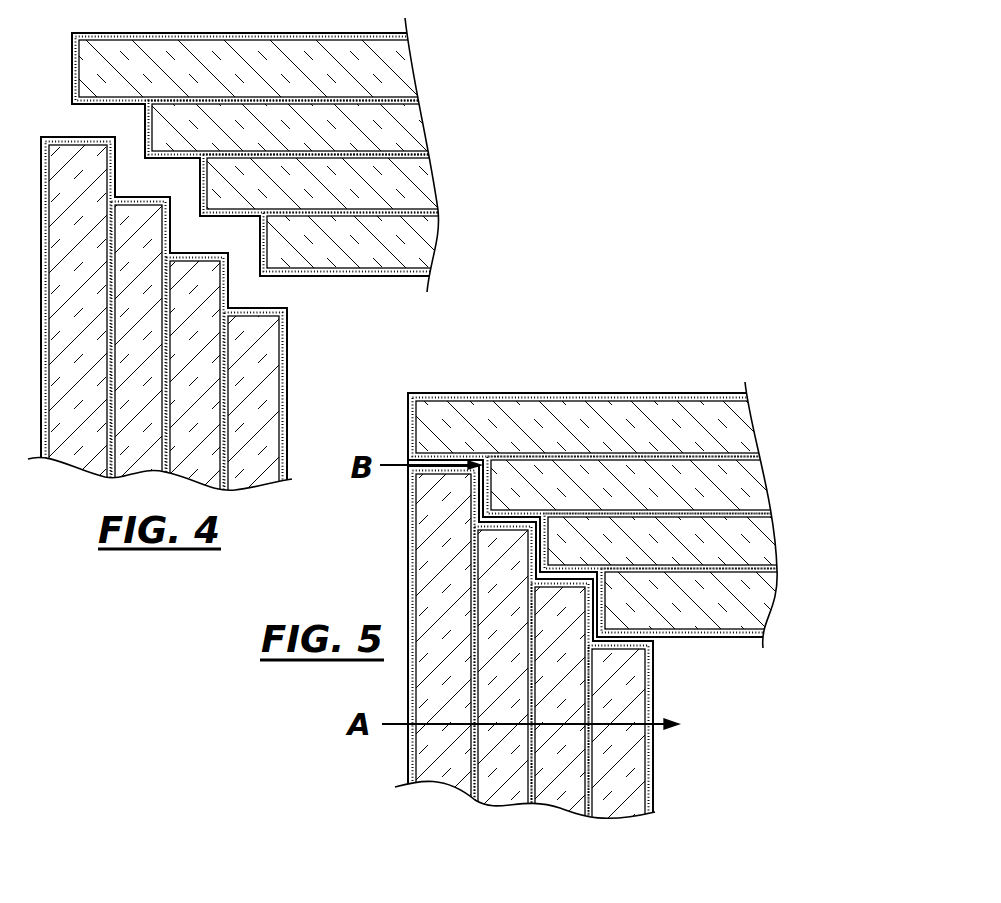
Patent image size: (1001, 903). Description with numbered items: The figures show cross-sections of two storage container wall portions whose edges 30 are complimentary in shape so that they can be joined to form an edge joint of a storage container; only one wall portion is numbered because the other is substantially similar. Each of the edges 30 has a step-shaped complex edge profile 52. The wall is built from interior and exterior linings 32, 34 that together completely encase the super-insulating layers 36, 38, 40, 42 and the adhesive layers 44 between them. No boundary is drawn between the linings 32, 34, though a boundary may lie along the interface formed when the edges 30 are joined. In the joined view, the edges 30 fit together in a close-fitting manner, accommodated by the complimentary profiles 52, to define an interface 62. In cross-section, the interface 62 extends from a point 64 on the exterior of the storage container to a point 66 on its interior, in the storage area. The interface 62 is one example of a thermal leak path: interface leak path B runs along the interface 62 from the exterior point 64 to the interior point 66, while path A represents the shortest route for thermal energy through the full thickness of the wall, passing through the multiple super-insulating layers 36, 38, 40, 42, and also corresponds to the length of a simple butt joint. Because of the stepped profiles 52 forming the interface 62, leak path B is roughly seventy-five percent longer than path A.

In FIG. 4, the edges 30 is at (72, 103).
In FIG. 4, the interior lining 32 is at (370, 282).
In FIG. 4, the exterior lining 34 is at (233, 33).
In FIG. 4, the super-insulating layer 36 is at (425, 240).
In FIG. 5, the super-insulating layer 36 is at (617, 797).
In FIG. 4, the super-insulating layer 38 is at (421, 180).
In FIG. 5, the super-insulating layer 38 is at (557, 795).
In FIG. 4, the super-insulating layer 40 is at (411, 124).
In FIG. 5, the super-insulating layer 40 is at (495, 788).
In FIG. 4, the super-insulating layer 42 is at (398, 63).
In FIG. 5, the super-insulating layer 42 is at (447, 777).
In FIG. 4, the adhesive layers 44 is at (178, 155).
In FIG. 4, the complex edge profile 52 is at (147, 162).
In FIG. 5, the interface 62 is at (484, 452).
In FIG. 5, the point 64 is at (410, 467).
In FIG. 5, the point 66 is at (648, 638).